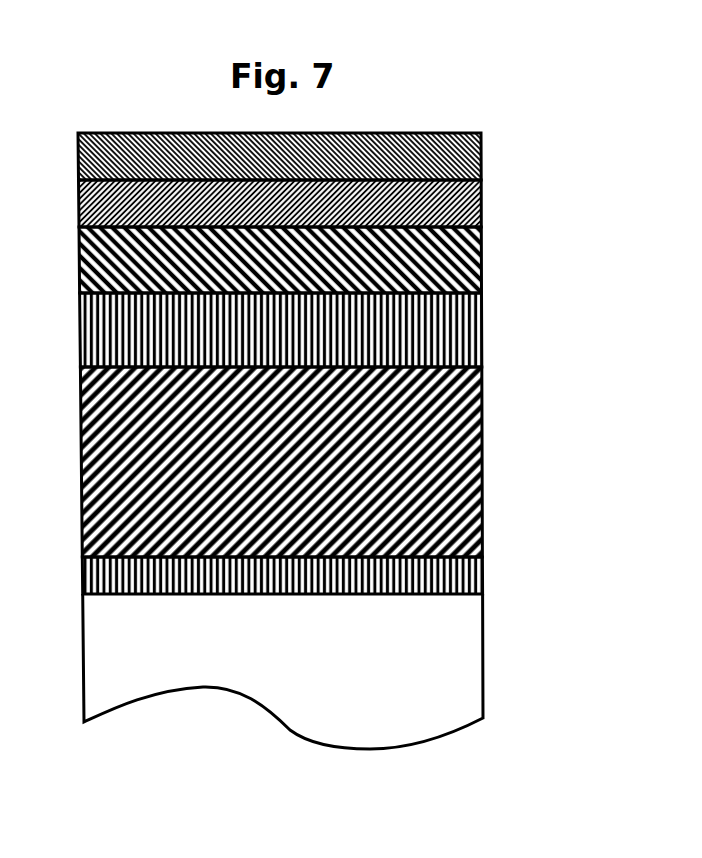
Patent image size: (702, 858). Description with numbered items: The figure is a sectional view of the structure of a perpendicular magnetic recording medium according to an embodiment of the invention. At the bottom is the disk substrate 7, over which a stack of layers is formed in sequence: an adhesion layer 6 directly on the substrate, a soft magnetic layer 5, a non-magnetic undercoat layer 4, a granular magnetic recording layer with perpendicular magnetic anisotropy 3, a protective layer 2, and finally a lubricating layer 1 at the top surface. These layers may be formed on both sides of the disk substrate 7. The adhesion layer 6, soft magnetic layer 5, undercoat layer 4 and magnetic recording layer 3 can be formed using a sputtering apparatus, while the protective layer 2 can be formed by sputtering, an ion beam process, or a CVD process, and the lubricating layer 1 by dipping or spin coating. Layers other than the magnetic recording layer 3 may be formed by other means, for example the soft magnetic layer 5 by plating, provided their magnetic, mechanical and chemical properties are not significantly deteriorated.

The lubricating layer 1 is at (481, 153).
The protective layer 2 is at (481, 208).
The granular magnetic recording layer with perpendicular magnetic anisotropy 3 is at (481, 269).
The non-magnetic undercoat layer 4 is at (481, 335).
The soft magnetic layer 5 is at (483, 443).
The adhesion layer 6 is at (483, 572).
The disk substrate 7 is at (483, 637).